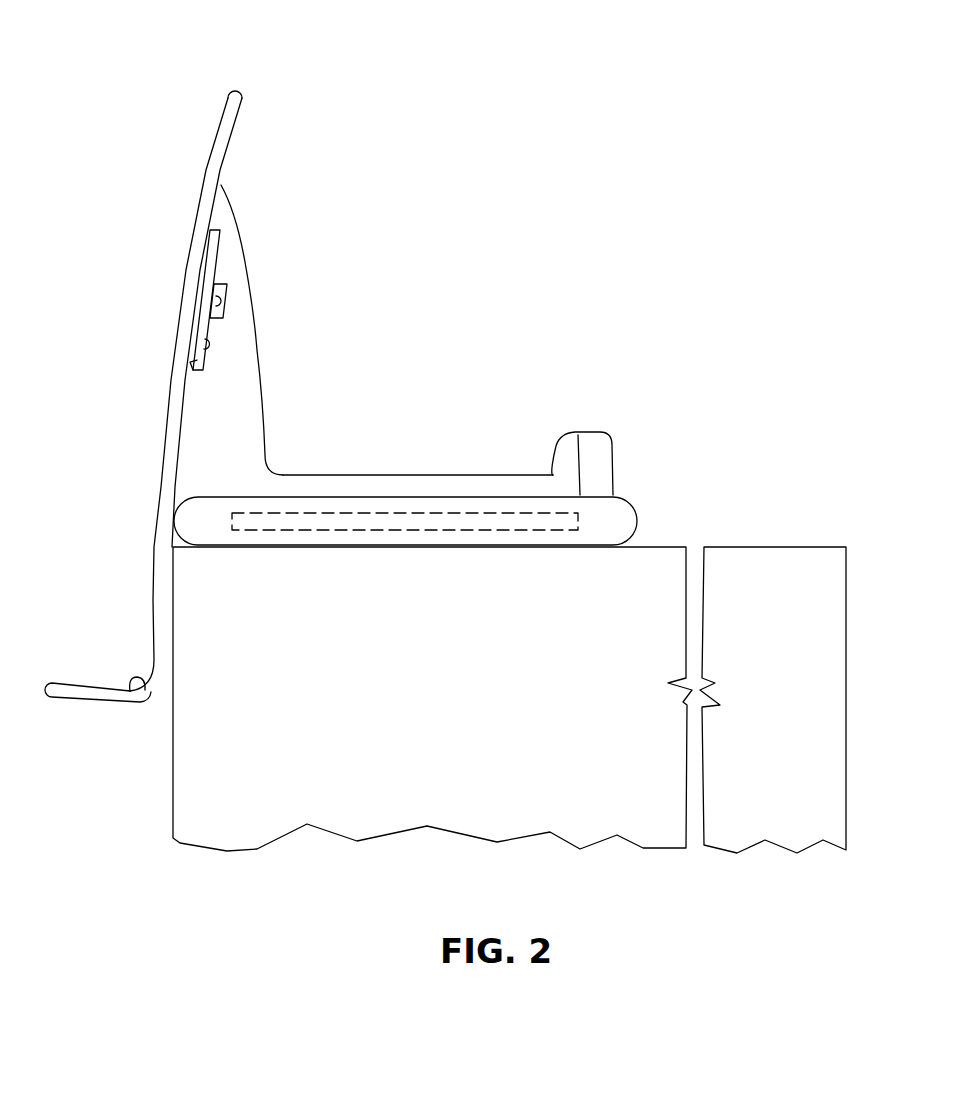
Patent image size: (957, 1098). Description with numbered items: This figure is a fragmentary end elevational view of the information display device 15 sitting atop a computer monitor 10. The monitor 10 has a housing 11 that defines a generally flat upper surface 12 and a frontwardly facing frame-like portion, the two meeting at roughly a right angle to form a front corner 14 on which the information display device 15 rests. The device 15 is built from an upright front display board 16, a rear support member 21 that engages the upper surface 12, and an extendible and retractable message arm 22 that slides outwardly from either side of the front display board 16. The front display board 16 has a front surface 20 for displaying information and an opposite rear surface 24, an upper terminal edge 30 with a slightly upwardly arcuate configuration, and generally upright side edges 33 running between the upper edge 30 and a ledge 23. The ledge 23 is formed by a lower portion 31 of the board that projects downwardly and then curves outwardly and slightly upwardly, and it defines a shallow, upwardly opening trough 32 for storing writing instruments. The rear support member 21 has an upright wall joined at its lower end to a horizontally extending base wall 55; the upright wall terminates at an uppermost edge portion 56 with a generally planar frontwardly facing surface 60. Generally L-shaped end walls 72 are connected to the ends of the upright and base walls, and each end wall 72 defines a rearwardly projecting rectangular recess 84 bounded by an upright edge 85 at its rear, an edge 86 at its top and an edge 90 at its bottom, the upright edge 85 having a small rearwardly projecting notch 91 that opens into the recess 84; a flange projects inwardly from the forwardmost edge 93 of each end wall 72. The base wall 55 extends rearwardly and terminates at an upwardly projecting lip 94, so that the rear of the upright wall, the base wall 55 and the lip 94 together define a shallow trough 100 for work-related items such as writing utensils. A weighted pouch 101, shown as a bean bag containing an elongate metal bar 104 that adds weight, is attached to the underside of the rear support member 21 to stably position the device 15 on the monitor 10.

The computer monitor 10 is at (162, 782).
The housing 11 is at (235, 850).
The upper surface 12 is at (668, 545).
The front corner 14 is at (172, 550).
The information display device 15 is at (333, 167).
The front display board 16 is at (143, 412).
The front surface 20 is at (185, 253).
The rear support member 21 is at (262, 372).
The message arm 22 is at (215, 258).
The ledge 23 is at (90, 690).
The rear surface 24 is at (238, 118).
The upper terminal edge 30 is at (238, 88).
The lower portion 31 is at (155, 587).
The trough 32 is at (140, 695).
The upright side edges 33 is at (180, 347).
The base wall 55 is at (383, 463).
The uppermost edge portion 56 is at (222, 183).
The frontwardly facing surface 60 is at (207, 213).
The end walls 72 is at (237, 452).
The recess 84 is at (192, 308).
The upright edges 85 is at (203, 337).
The upper edges 86 is at (188, 265).
The lower edges 90 is at (190, 362).
The notches 91 is at (223, 290).
The forwardmost edge 93 is at (177, 463).
The lip 94 is at (590, 430).
The trough 100 is at (477, 467).
The weighted pouch 101 is at (633, 502).
The elongate bar 104 is at (473, 520).